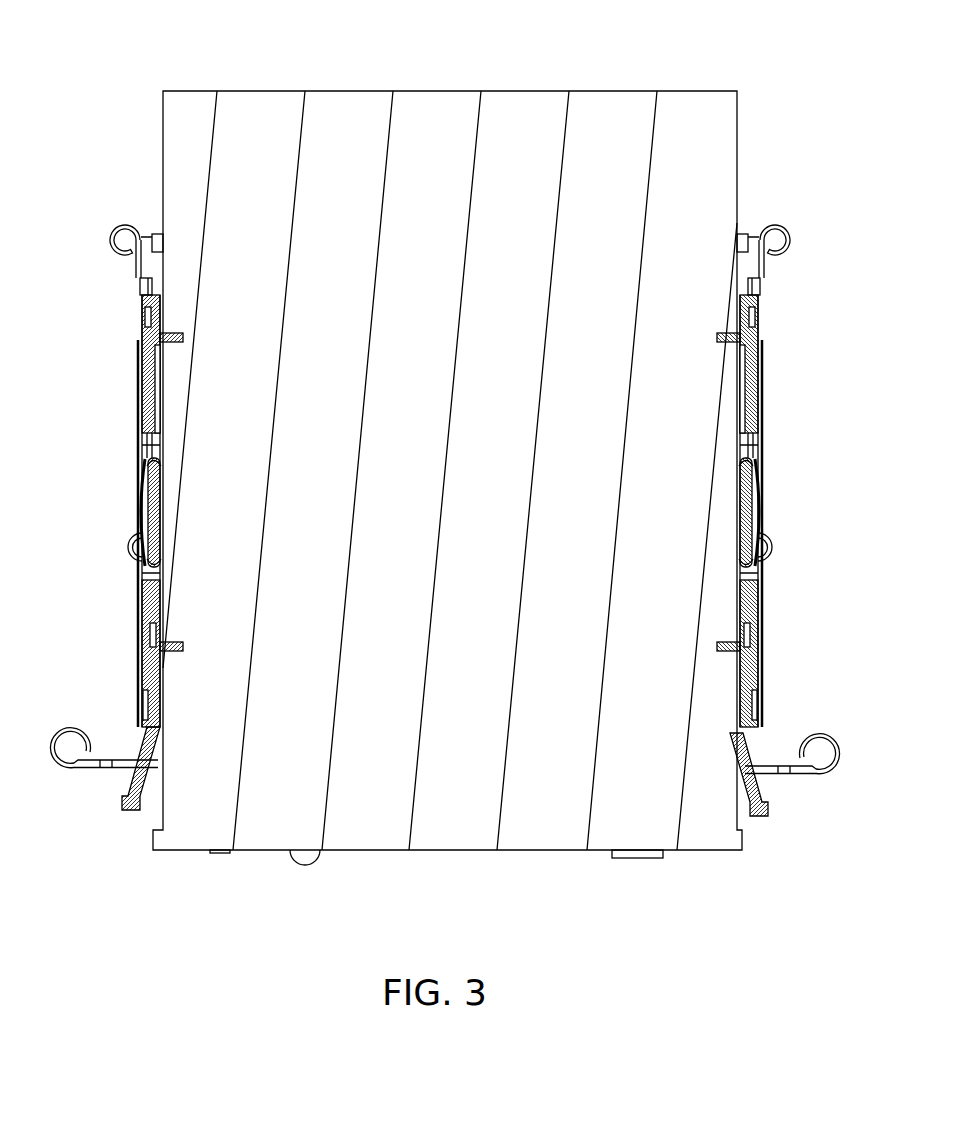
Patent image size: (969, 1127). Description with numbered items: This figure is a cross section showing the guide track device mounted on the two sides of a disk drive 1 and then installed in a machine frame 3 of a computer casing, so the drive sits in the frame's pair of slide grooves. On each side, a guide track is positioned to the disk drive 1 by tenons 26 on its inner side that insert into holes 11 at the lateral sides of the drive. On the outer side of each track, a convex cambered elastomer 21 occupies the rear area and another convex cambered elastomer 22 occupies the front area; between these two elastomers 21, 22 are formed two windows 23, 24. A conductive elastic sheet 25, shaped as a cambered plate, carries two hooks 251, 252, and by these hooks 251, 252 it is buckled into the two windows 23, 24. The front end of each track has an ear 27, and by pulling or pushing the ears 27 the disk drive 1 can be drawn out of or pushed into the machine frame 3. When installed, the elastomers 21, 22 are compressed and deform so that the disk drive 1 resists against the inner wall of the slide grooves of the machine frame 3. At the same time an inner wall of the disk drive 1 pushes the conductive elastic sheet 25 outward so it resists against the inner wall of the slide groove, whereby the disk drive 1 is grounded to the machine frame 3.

The disk drive 1 is at (445, 143).
The machine frame 3 is at (127, 537).
The holes 11 is at (450, 509).
The tenons 26 is at (183, 333).
The convex cambered elastomer 21 is at (137, 366).
The convex cambered elastomer 22 is at (138, 658).
The window 23 is at (150, 452).
The window 24 is at (147, 560).
The conductive elastic sheet 25 is at (137, 508).
The hook 251 is at (160, 463).
The hook 252 is at (158, 557).
The ear 27 is at (137, 812).